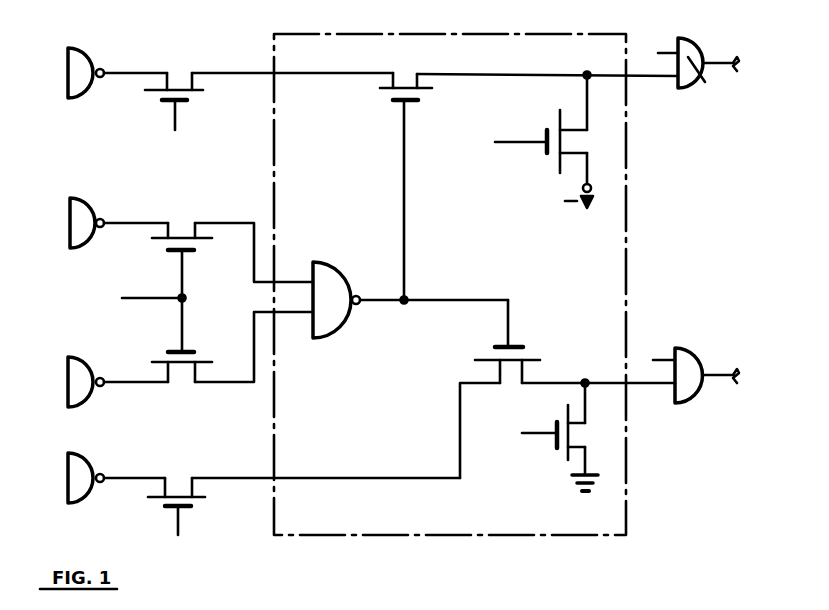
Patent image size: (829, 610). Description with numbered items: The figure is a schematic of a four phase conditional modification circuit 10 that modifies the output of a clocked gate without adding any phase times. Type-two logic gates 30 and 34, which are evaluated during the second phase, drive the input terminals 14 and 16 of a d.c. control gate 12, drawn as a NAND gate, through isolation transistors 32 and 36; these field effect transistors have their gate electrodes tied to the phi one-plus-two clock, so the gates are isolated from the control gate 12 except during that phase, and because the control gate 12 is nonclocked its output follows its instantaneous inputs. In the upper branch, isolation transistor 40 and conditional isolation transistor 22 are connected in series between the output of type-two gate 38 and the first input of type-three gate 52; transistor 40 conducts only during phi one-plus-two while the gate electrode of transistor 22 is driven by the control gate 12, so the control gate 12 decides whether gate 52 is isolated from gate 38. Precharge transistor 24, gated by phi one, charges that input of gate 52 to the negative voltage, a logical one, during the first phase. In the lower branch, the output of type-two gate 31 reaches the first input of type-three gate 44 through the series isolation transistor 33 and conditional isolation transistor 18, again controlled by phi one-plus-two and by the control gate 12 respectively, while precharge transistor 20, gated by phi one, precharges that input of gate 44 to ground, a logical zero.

The conditional modification circuit 10 is at (413, 537).
The d.c. control gate 12 is at (339, 309).
The input terminal 14 is at (301, 314).
The input terminal 16 is at (282, 282).
The conditional isolation transistor 18 is at (528, 358).
The precharge transistor 20 is at (562, 451).
The conditional isolation transistor 22 is at (393, 91).
The precharge transistor 24 is at (556, 152).
The type-two logic gate 30 is at (82, 388).
The type-two logic gate 31 is at (80, 484).
The isolation transistor 32 is at (181, 366).
The isolation transistor 33 is at (180, 490).
The type-two logic gate 34 is at (82, 233).
The isolation transistor 36 is at (184, 233).
The type-two logic gate 38 is at (80, 78).
The isolation transistor 40 is at (175, 86).
The type-three gate 44 is at (696, 375).
The type-three gate 52 is at (698, 76).